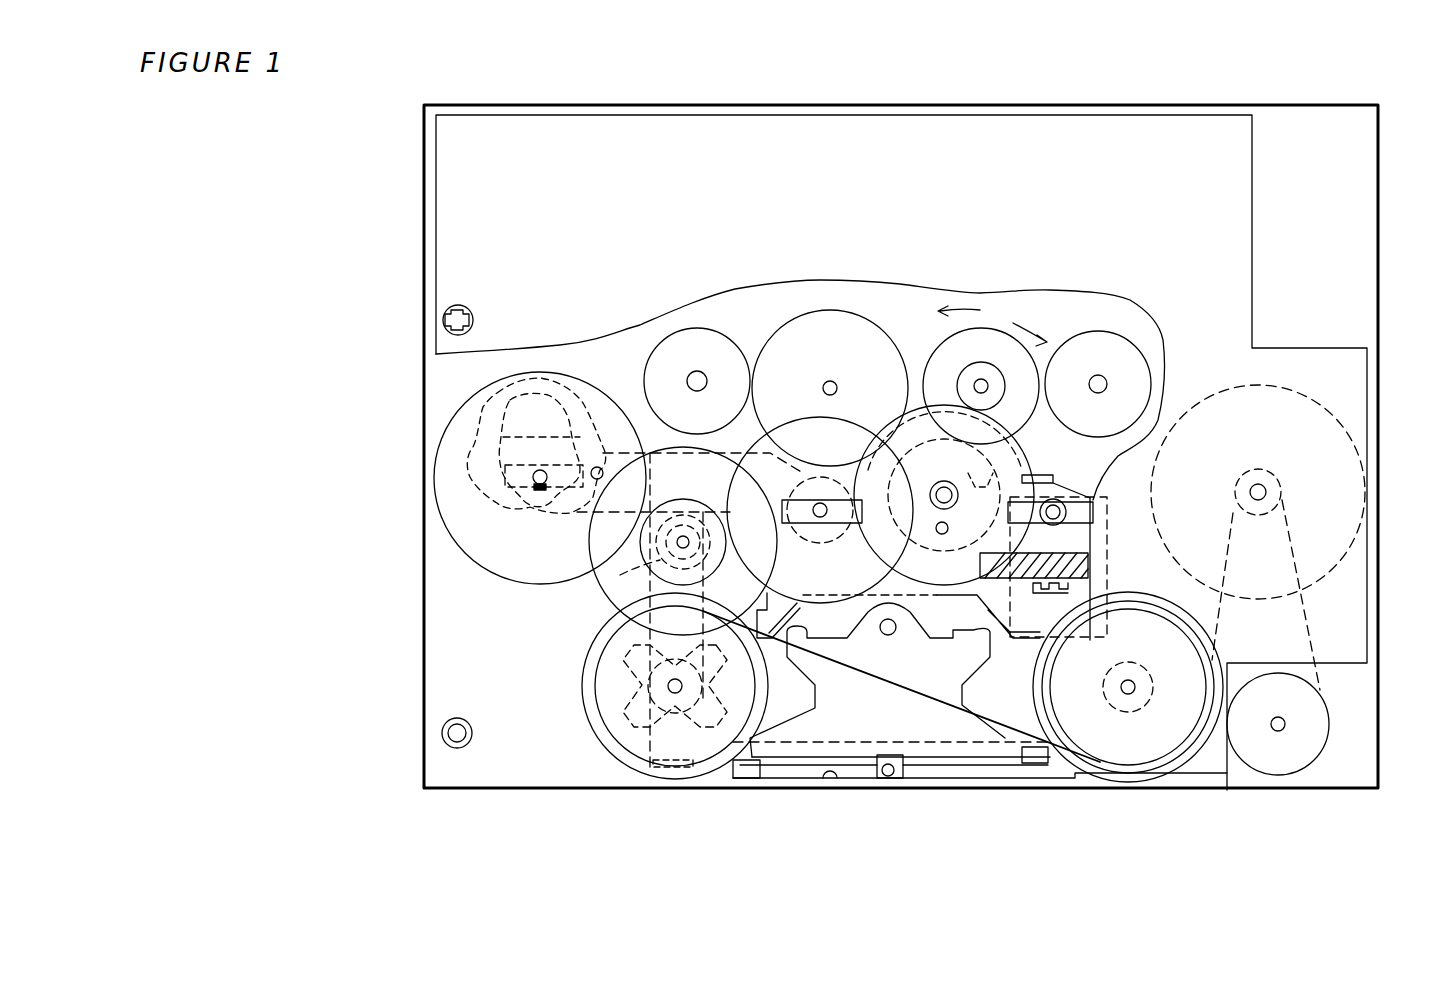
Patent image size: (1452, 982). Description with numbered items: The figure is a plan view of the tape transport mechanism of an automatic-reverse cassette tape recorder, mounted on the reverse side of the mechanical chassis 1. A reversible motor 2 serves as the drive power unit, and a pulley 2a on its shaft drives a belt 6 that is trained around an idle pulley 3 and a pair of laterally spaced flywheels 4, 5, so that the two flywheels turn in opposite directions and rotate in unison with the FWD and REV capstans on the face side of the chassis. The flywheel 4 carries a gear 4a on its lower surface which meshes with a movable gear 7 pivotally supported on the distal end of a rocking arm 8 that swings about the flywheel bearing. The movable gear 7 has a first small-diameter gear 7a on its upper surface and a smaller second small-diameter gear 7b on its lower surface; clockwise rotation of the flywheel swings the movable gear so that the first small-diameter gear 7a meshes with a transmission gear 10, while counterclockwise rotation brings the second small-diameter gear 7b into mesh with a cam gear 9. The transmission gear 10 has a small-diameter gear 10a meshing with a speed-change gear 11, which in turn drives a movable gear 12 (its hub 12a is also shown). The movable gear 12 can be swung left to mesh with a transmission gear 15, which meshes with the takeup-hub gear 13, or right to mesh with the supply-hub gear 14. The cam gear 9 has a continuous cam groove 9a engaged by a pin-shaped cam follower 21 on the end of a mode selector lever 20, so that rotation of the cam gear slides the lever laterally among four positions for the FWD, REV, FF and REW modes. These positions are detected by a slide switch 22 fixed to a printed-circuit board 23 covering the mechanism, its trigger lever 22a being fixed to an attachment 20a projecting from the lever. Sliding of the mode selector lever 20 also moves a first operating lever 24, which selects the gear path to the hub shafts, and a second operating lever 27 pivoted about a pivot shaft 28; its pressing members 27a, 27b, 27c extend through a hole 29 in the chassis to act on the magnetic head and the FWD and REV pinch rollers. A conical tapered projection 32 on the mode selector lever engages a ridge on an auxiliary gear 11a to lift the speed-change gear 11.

The mechanical chassis 1 is at (488, 790).
The reversible motor 2 is at (1333, 417).
The pulley 2a is at (1280, 477).
The idle pulley 3 is at (1287, 760).
The flywheel 4 is at (645, 743).
The gear 4a is at (645, 720).
The flywheel 5 is at (1163, 733).
The belt 6 is at (1229, 790).
The movable gear 7 is at (603, 543).
The first small-diameter gear 7a is at (653, 580).
The second small-diameter gear 7b is at (650, 560).
The rocking arm 8 is at (600, 676).
The cam gear 9 is at (452, 502).
The cam groove 9a is at (535, 377).
The transmission gear 10 is at (803, 460).
The small-diameter gear 10a is at (782, 505).
The speed-change gear 11 is at (913, 433).
The auxiliary gear 11a is at (897, 430).
The movable gear 12 is at (982, 350).
The gear hub 12a is at (987, 385).
The gear 13 is at (687, 340).
The gear 14 is at (1122, 345).
The transmission gear 15 is at (842, 322).
The mode selector lever 20 is at (1013, 600).
The attachment 20a is at (1053, 530).
The cam follower 21 is at (598, 466).
The slide switch 22 is at (1028, 580).
The trigger lever 22a is at (1050, 594).
The printed-circuit board 23 is at (1355, 625).
The first operating lever 24 is at (1047, 382).
The second operating lever 27 is at (857, 712).
The pressing member 27a is at (889, 777).
The pressing member 27b is at (762, 760).
The pressing member 27c is at (1035, 763).
The pivot shaft 28 is at (888, 636).
The hole 29 is at (825, 779).
The tapered projection 32 is at (940, 535).